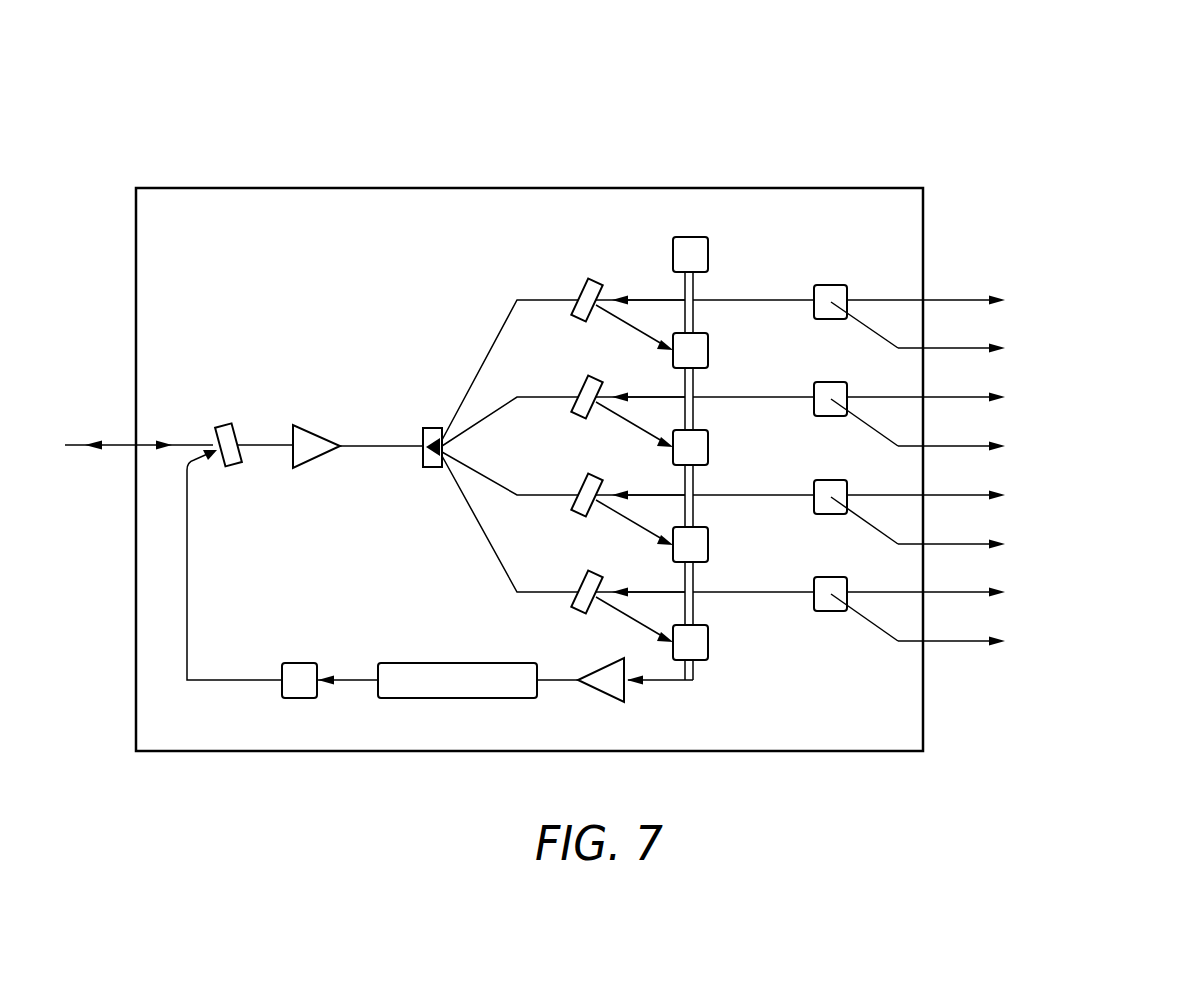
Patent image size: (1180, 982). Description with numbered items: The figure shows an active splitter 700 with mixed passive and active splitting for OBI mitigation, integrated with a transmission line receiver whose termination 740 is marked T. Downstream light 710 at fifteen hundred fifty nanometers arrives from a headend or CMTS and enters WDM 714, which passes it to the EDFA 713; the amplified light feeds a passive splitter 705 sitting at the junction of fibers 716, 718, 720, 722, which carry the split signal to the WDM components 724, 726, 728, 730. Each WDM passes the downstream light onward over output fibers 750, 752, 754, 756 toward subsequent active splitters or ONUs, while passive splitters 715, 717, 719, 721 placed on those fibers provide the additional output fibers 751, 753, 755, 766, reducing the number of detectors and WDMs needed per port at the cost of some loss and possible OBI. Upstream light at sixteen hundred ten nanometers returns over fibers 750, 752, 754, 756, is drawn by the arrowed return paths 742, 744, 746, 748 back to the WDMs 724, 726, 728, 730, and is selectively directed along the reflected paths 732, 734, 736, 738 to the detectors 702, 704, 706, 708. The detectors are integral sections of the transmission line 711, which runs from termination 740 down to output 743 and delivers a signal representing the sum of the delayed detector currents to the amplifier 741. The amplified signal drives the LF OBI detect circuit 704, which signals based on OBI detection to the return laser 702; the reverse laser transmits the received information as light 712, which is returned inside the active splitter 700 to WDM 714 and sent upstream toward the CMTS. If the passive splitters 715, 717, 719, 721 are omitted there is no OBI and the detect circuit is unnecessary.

The active splitter 700 is at (1062, 168).
The detector / reverse laser 702 is at (710, 350).
The detector / LF OBI detect circuit 704 is at (710, 448).
The passive splitter 705 is at (431, 469).
The detector 706 is at (710, 545).
The detector 708 is at (710, 643).
The light input 710 is at (113, 444).
The transmission line 711 is at (694, 672).
The return light / input 712 is at (188, 605).
The EDFA 713 is at (333, 436).
The WDM 714 is at (222, 425).
The passive splitter 715 is at (832, 284).
The fiber 716 is at (503, 326).
The passive splitter 717 is at (832, 381).
The fiber 718 is at (507, 397).
The passive splitter 719 is at (832, 479).
The fiber 720 is at (499, 493).
The passive splitter 721 is at (832, 576).
The fiber 722 is at (492, 548).
The WDM 724 is at (580, 285).
The WDM 726 is at (580, 382).
The WDM 728 is at (580, 480).
The WDM 730 is at (580, 577).
The reflected optical path 732 is at (633, 327).
The reflected optical path 734 is at (633, 424).
The reflected optical path 736 is at (633, 521).
The reflected optical path 738 is at (633, 617).
The termination / transmission line receiver 740 is at (710, 252).
The amplifier 741 is at (603, 694).
The return path 742 is at (647, 297).
The output 743 is at (665, 682).
The return path 744 is at (647, 394).
The return path 746 is at (647, 492).
The return path 748 is at (647, 589).
The output fiber 750 is at (937, 300).
The additional output fiber 751 is at (937, 348).
The output fiber 752 is at (937, 397).
The additional output fiber 753 is at (937, 446).
The output fiber 754 is at (937, 495).
The additional output fiber 755 is at (937, 544).
The output fiber 756 is at (937, 592).
The additional output fiber 766 is at (937, 641).